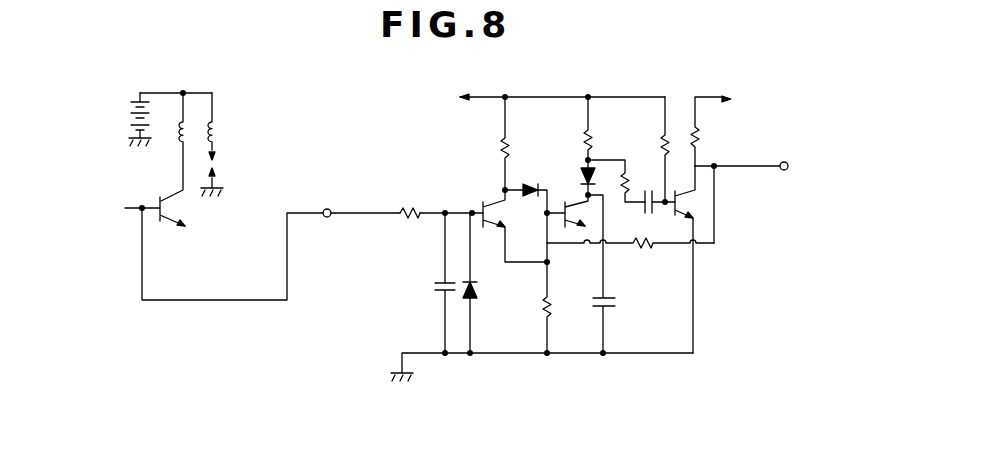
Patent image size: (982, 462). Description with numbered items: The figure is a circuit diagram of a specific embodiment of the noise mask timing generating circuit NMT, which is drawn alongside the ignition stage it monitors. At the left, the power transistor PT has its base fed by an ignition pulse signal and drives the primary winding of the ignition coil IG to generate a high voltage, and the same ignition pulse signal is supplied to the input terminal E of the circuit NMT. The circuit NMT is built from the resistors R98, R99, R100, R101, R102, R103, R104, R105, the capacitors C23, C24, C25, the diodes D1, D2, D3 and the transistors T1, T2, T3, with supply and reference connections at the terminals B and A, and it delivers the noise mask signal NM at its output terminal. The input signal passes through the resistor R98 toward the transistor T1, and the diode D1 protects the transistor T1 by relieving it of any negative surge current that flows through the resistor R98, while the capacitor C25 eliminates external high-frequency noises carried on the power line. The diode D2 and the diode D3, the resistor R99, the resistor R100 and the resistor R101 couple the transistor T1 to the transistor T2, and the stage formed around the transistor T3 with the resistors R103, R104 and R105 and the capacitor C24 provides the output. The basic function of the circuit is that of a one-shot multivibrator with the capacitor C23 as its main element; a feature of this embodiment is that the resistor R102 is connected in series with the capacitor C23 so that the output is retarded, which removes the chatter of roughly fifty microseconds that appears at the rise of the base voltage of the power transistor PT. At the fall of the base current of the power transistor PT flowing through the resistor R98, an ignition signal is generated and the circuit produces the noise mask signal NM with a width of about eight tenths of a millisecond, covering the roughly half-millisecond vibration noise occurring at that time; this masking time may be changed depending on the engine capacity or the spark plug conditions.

The power transistor PT is at (218, 196).
The ignition coil IG is at (227, 144).
The noise mask timing generating circuit NMT is at (386, 149).
The input terminal E is at (327, 198).
The terminal B is at (451, 98).
The terminal A is at (738, 100).
The noise mask signal NM is at (764, 197).
The resistor R98 is at (416, 197).
The resistor R99 is at (503, 148).
The resistor R100 is at (544, 302).
The resistor R101 is at (588, 146).
The resistor R102 is at (627, 171).
The resistor R103 is at (663, 138).
The resistor R104 is at (697, 135).
The resistor R105 is at (643, 252).
The diode D1 is at (477, 298).
The diode D2 is at (516, 186).
The diode D3 is at (585, 180).
The transistor T1 is at (497, 216).
The transistor T2 is at (585, 227).
The transistor T3 is at (700, 207).
The capacitor C23 is at (645, 213).
The capacitor C24 is at (611, 309).
The capacitor C25 is at (435, 291).